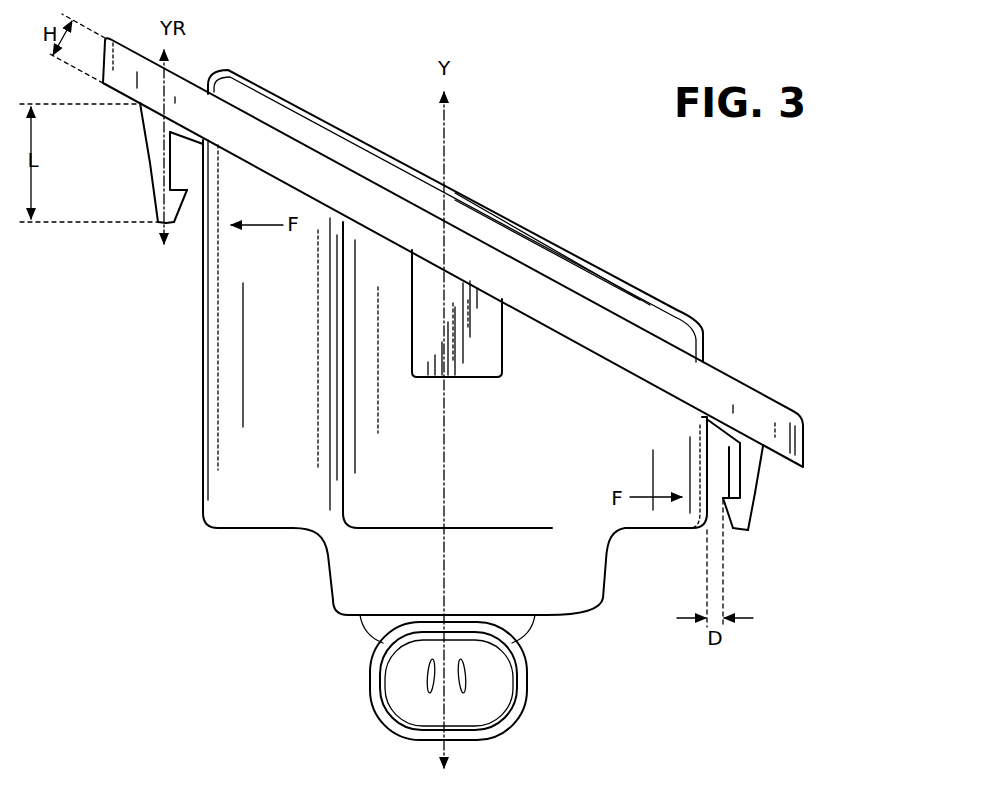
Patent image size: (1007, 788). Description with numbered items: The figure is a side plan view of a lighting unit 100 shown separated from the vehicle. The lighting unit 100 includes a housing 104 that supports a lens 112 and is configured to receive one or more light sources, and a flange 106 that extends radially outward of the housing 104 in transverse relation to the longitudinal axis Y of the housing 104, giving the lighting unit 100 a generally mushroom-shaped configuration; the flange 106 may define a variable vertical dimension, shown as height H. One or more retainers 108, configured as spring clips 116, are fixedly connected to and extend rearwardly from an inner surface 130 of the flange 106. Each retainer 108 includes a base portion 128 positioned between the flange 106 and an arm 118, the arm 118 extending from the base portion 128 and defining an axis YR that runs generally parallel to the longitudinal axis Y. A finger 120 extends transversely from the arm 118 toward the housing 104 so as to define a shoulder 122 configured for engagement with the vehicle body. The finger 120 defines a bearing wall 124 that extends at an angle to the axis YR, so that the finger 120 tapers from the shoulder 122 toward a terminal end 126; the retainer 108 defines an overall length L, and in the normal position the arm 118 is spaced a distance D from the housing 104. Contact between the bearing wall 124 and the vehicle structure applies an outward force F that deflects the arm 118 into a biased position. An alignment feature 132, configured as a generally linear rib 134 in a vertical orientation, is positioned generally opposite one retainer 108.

The lighting unit 100 is at (515, 122).
The housing 104 is at (200, 473).
The flange 106 is at (808, 444).
The retainer 108 is at (120, 231).
The lens 112 is at (628, 280).
The spring clip 116 is at (125, 133).
The arm 118 is at (152, 163).
The finger 120 is at (175, 224).
The shoulder 122 is at (173, 212).
The bearing wall 124 is at (178, 207).
The terminal end 126 is at (158, 224).
The base portion 128 is at (177, 130).
The inner surface 130 is at (653, 387).
The alignment feature 132 is at (470, 388).
The rib 134 is at (486, 326).